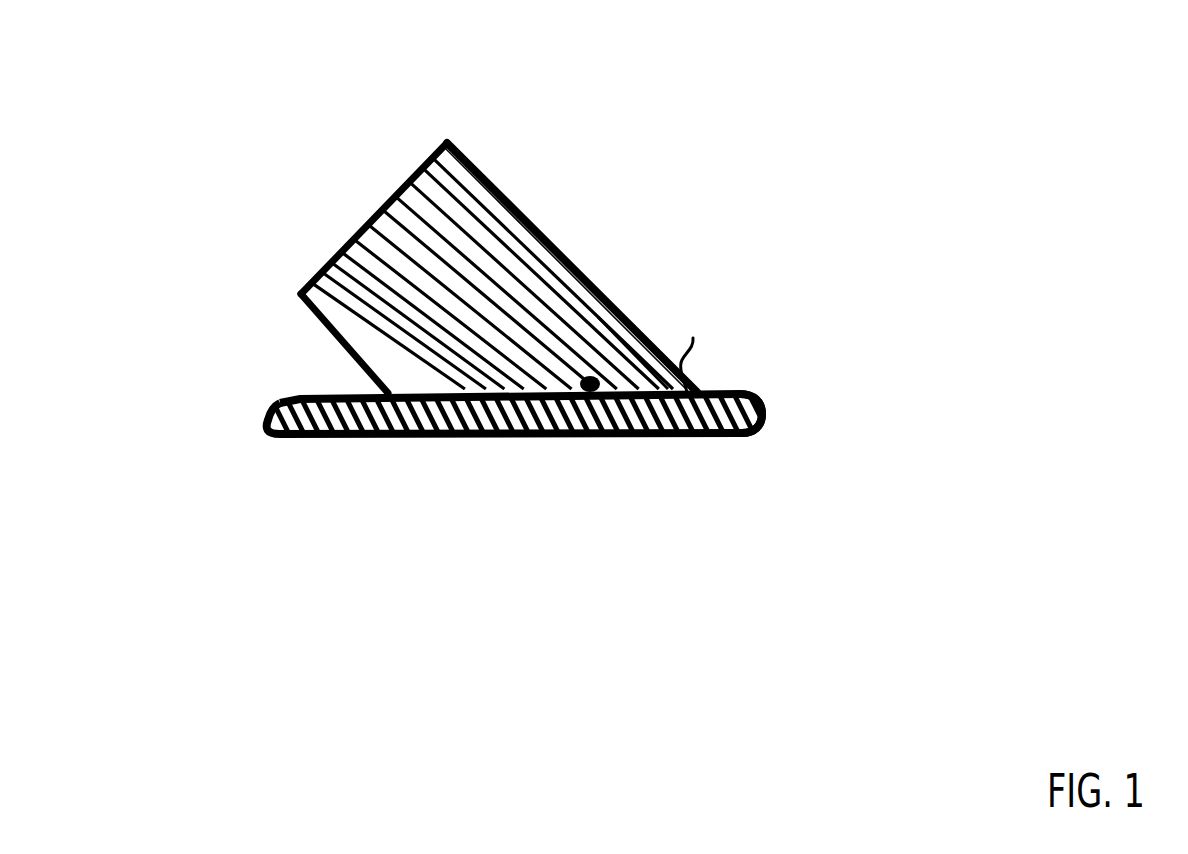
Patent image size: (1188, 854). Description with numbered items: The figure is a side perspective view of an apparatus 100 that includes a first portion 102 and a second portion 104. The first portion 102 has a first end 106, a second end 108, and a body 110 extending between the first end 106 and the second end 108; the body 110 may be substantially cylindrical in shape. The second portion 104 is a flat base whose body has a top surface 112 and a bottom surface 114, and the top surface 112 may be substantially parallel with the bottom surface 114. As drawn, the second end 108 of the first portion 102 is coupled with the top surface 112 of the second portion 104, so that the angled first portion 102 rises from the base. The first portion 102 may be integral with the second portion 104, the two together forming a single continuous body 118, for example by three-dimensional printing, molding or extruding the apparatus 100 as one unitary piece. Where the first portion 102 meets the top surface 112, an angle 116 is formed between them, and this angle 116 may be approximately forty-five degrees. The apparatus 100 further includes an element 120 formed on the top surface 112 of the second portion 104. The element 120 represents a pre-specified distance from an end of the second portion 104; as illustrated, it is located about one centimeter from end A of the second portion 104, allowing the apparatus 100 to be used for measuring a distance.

The apparatus 100 is at (264, 58).
The first portion 102 is at (526, 128).
The second portion 104 is at (535, 391).
The first end 106 is at (323, 254).
The second end 108 is at (693, 346).
The body 110 is at (553, 238).
The top surface 112 is at (708, 393).
The bottom surface 114 is at (411, 437).
The angle 116 is at (363, 380).
The single continuous body 118 is at (638, 238).
The element 120 is at (593, 377).
The end A is at (762, 414).